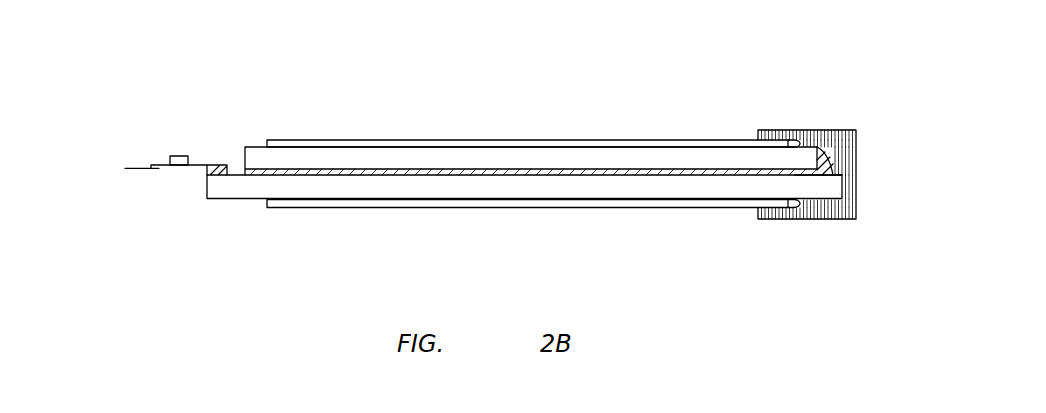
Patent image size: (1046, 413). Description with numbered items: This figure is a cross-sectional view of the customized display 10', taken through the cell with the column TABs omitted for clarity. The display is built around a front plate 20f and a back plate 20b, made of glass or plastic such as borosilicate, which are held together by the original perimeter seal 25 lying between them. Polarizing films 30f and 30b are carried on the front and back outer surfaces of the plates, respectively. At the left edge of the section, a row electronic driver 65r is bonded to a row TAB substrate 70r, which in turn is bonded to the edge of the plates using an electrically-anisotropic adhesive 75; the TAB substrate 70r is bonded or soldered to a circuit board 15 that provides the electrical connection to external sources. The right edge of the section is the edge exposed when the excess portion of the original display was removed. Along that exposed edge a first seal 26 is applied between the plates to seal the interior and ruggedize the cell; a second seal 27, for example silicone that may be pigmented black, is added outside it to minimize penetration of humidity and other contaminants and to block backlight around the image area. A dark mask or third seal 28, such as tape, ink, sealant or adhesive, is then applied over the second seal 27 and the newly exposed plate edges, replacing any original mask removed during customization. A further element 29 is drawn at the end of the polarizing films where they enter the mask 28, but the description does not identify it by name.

The customized display 10' is at (737, 79).
The circuit board 15 is at (133, 168).
The front plate 20f is at (245, 147).
The back plate 20b is at (207, 198).
The perimeter seal 25 is at (650, 173).
The first seal 26 is at (805, 173).
The second seal 27 is at (837, 158).
The mask or third seal 28 is at (847, 140).
The seal 29 is at (798, 140).
The front polarizing film 30f is at (307, 140).
The back polarizing film 30b is at (287, 208).
The row electronic driver 65r is at (179, 156).
The row TAB substrate 70r is at (200, 167).
The electrically-anisotropic adhesive 75 is at (220, 175).